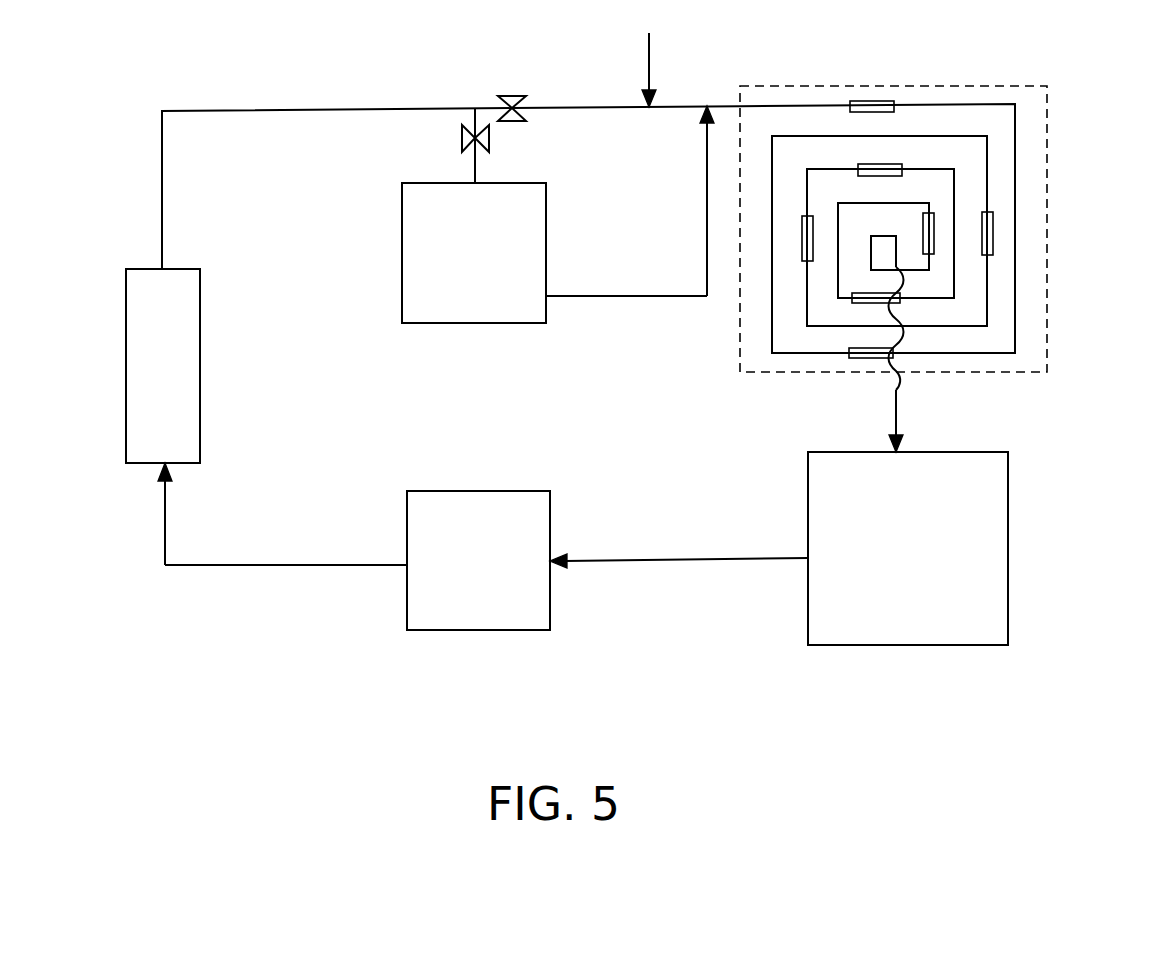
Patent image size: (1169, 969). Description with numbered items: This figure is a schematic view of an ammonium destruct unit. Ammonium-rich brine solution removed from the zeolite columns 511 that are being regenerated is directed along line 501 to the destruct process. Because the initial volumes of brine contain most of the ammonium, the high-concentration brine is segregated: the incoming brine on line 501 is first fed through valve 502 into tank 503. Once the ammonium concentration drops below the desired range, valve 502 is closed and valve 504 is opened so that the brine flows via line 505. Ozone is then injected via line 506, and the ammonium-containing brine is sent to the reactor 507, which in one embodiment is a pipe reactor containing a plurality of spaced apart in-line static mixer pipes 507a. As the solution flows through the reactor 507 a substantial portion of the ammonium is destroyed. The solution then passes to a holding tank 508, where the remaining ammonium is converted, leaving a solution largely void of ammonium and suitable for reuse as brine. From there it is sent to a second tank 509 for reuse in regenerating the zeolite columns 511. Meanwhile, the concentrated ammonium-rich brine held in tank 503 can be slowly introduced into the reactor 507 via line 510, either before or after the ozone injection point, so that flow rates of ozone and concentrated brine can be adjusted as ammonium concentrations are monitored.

The line 501 is at (322, 110).
The valve 502 is at (462, 141).
The tank 503 is at (486, 285).
The valve 504 is at (512, 95).
The line 505 is at (580, 107).
The line 506 is at (650, 48).
The reactor 507 is at (1047, 143).
The in-line static mixer pipes 507a is at (993, 222).
The holding tank 508 is at (922, 618).
The second tank 509 is at (490, 591).
The line 510 is at (627, 296).
The zeolite columns 511 is at (172, 359).